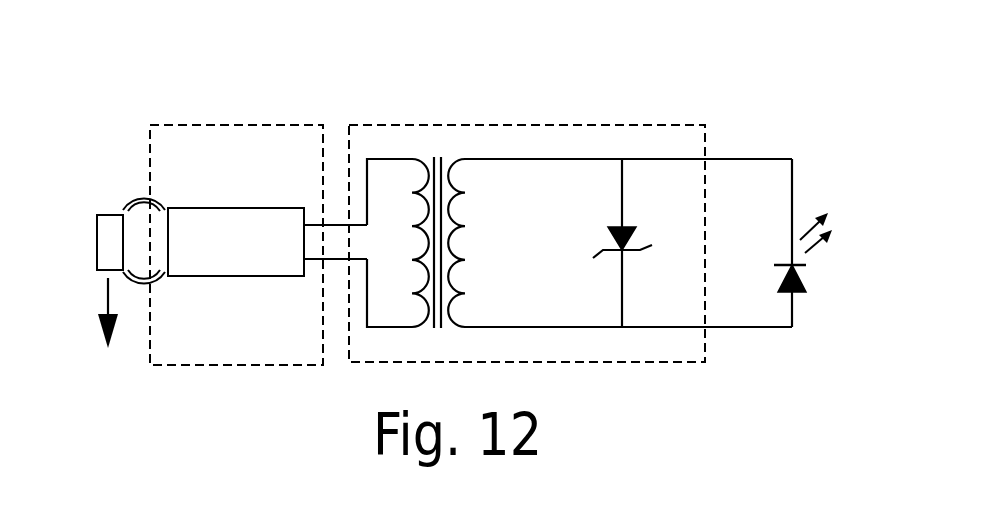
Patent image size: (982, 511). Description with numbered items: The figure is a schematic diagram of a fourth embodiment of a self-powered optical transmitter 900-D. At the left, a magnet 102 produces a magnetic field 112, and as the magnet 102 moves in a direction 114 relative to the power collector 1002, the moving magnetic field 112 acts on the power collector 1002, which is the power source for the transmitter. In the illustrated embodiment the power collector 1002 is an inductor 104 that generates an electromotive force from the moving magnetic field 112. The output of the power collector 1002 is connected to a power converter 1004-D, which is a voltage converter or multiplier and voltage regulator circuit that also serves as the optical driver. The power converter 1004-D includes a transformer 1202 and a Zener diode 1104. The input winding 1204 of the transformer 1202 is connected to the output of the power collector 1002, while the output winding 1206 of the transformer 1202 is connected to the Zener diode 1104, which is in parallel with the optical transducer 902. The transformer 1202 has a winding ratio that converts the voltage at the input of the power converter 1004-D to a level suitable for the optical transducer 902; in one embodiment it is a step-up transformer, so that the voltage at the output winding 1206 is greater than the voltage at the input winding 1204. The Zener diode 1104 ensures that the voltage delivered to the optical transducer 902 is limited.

The self-powered optical transmitter 900-D is at (175, 56).
The magnet 102 is at (97, 247).
The magnetic field 112 is at (137, 197).
The direction 114 is at (108, 302).
The inductor 104 is at (213, 207).
The power collector 1002 is at (305, 158).
The power converter 1004-D is at (678, 96).
The transformer 1202 is at (578, 172).
The input winding 1204 is at (412, 159).
The output winding 1206 is at (620, 206).
The Zener diode 1104 is at (618, 227).
The optical transducer 902 is at (793, 293).